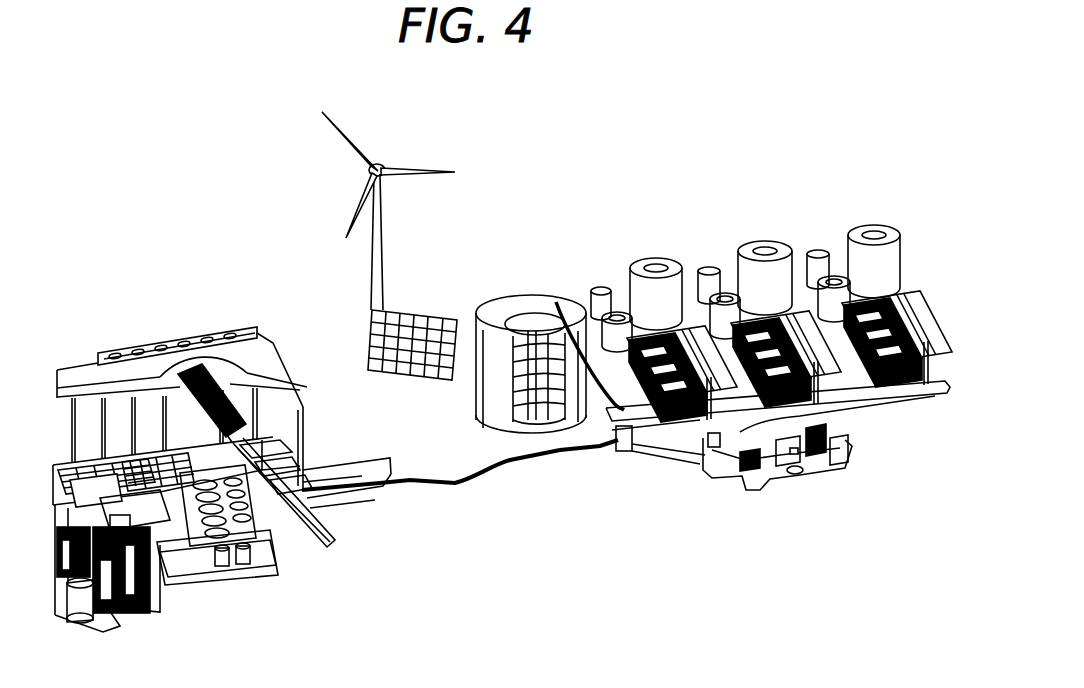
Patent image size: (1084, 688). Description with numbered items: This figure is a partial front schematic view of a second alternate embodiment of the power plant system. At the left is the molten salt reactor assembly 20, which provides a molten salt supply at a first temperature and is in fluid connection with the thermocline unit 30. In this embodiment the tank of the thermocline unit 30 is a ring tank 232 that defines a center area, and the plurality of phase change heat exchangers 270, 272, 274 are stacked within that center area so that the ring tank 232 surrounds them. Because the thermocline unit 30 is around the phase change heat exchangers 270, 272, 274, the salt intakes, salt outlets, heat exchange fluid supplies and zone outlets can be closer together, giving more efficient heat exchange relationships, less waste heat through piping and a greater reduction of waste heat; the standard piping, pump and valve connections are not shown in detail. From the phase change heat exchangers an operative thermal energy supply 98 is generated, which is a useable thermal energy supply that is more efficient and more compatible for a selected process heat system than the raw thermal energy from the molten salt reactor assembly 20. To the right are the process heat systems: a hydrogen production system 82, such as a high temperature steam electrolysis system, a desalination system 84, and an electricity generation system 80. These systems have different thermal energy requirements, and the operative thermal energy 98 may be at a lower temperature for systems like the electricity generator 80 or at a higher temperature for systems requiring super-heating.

The molten salt reactor assembly 20 is at (182, 352).
The thermocline unit 30 is at (489, 313).
The ring tank 232 is at (536, 300).
The phase change heat exchanger 270 is at (540, 336).
The phase change heat exchanger 272 is at (544, 364).
The phase change heat exchanger 274 is at (546, 335).
The operative thermal energy supply 98 is at (610, 400).
The hydrogen production system 82 is at (651, 259).
The desalination system 84 is at (757, 250).
The electricity generation system 80 is at (812, 468).